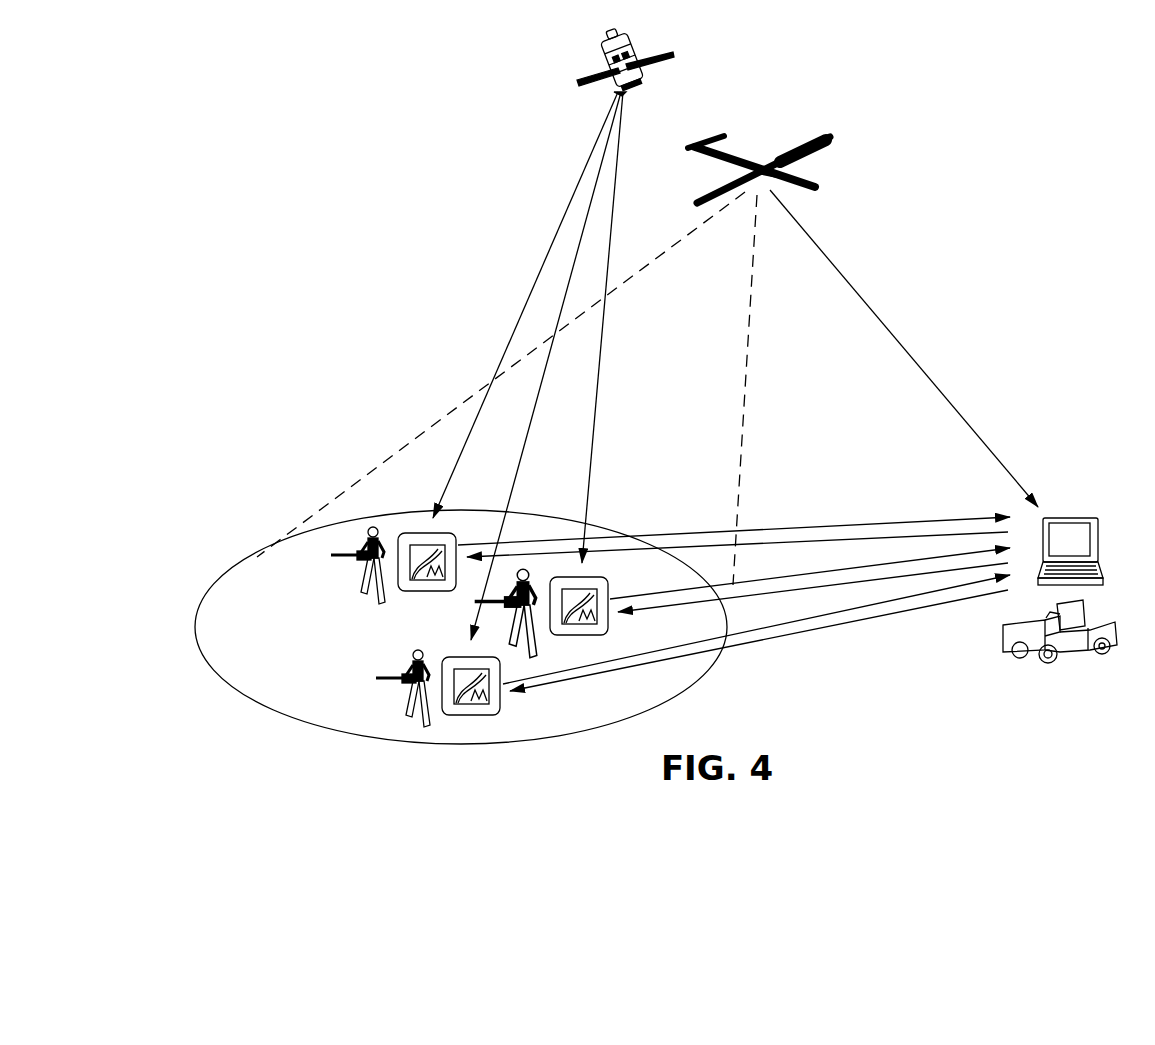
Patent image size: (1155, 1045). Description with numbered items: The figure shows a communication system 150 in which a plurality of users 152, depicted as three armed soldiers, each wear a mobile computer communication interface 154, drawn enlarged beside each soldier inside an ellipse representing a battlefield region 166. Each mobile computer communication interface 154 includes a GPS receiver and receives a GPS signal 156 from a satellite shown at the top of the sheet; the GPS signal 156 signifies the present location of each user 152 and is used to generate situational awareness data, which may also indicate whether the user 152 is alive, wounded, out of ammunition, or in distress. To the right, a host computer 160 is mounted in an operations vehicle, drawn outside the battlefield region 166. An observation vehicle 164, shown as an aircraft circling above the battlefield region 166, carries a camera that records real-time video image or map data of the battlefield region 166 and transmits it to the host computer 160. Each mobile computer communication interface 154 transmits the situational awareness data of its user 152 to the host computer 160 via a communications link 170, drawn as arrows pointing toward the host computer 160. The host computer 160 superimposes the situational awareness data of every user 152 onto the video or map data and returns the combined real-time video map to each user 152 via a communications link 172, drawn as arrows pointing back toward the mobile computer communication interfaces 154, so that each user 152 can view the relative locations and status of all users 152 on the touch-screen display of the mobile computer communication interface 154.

The communication system 150 is at (246, 80).
The user 152 is at (368, 540).
The mobile computer communication interface 154 is at (427, 532).
The GPS signal 156 is at (528, 303).
The host computer 160 is at (1073, 516).
The observation vehicle 164 is at (823, 133).
The battlefield region 166 is at (461, 627).
The communications link 170 is at (804, 527).
The communications link 172 is at (818, 540).